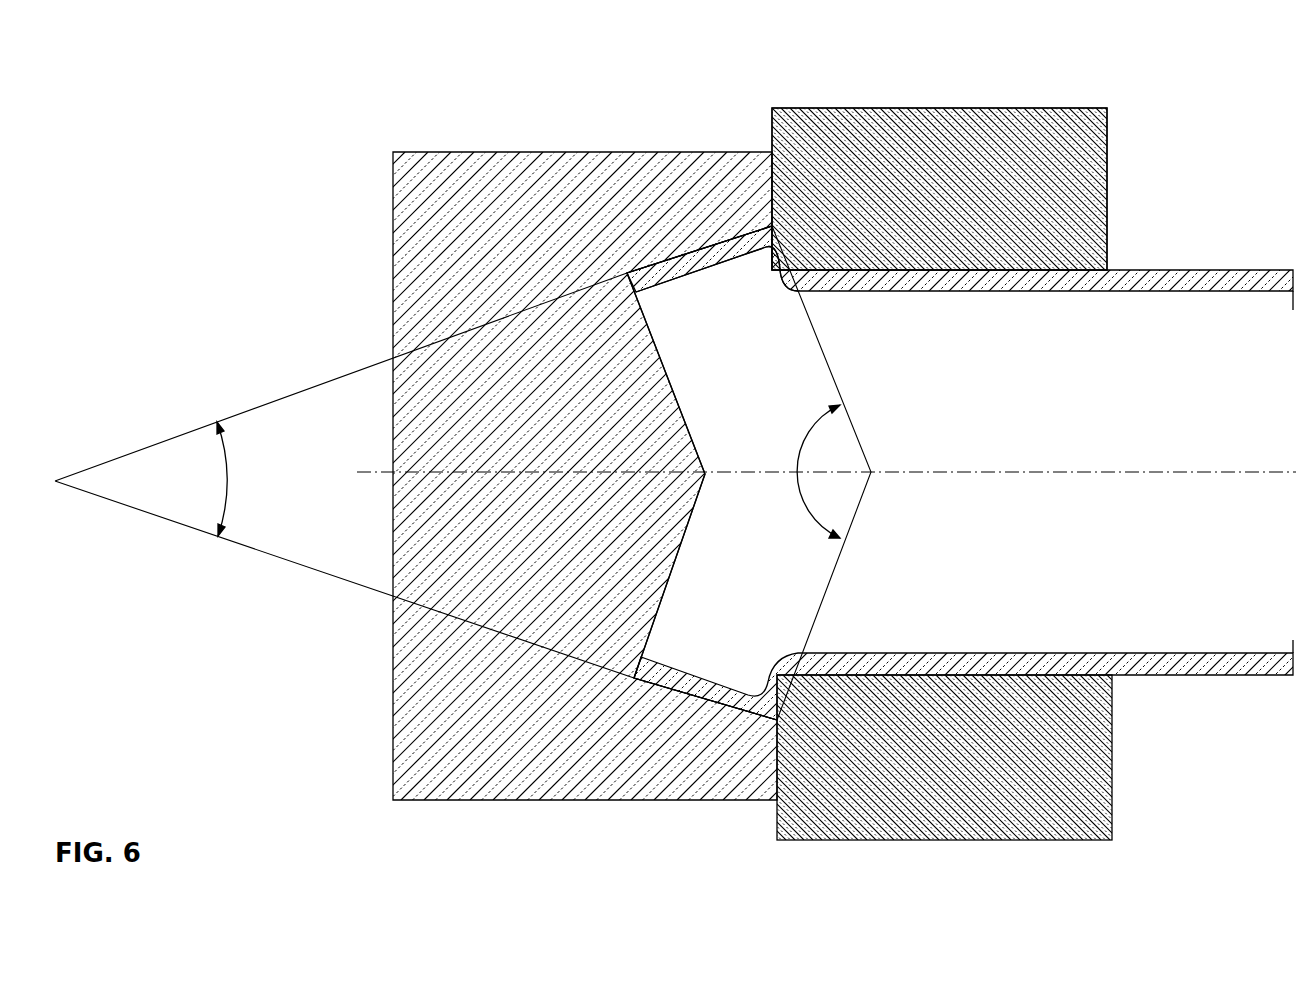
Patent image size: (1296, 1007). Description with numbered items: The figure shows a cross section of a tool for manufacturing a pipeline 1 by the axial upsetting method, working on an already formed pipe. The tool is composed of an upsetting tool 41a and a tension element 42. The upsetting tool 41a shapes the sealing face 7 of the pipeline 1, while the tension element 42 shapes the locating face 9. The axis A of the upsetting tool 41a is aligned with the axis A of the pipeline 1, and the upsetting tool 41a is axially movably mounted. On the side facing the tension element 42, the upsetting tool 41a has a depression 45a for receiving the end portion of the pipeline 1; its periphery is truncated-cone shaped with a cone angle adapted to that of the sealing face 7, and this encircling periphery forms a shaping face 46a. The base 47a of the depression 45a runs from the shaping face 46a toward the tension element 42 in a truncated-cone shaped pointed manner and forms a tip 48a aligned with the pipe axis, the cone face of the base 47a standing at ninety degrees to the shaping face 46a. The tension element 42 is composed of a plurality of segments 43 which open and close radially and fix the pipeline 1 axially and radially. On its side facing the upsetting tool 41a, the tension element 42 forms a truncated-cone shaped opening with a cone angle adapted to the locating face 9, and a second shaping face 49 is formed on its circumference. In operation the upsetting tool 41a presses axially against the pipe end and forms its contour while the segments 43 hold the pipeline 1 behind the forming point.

The pipeline 1 is at (1232, 270).
The sealing face 7 is at (722, 240).
The locating face 9 is at (779, 227).
The upsetting tool 41a is at (433, 288).
The tension element 42 is at (1109, 190).
The segments 43 is at (935, 132).
The depression 45a is at (661, 330).
The shaping face 46a is at (663, 258).
The base 47a is at (647, 592).
The tip 48a is at (707, 477).
The second shaping face 49 is at (780, 238).
The axis A is at (371, 472).